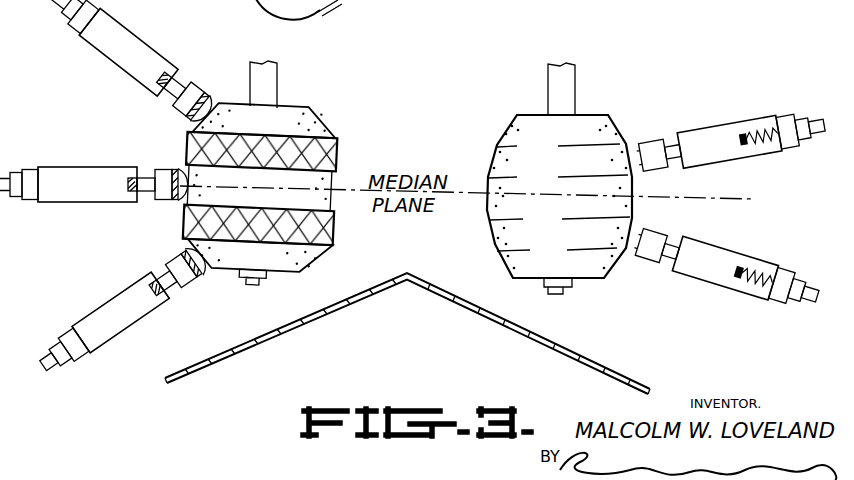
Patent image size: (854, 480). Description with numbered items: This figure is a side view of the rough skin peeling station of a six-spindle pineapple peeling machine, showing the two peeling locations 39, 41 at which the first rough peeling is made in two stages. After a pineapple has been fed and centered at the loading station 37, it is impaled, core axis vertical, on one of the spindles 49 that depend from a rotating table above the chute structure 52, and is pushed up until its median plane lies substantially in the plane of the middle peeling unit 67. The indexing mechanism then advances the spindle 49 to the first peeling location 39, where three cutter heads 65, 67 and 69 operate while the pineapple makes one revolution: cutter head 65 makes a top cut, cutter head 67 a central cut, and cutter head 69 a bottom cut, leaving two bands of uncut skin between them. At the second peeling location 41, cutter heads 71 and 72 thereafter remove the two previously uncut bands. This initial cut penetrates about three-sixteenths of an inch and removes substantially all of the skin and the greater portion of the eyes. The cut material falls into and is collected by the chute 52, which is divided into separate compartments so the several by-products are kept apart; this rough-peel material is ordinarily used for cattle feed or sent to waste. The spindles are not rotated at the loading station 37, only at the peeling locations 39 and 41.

The loading station 37 is at (342, 10).
The peeling location 39 is at (334, 122).
The peeling location 41 is at (622, 118).
The spindle 49 is at (273, 87).
The chute structure 52 is at (358, 298).
The cutter head 65 is at (150, 23).
The cutter head 67 is at (80, 140).
The cutter head 69 is at (118, 292).
The cutter head 71 is at (745, 255).
The cutter head 72 is at (727, 101).